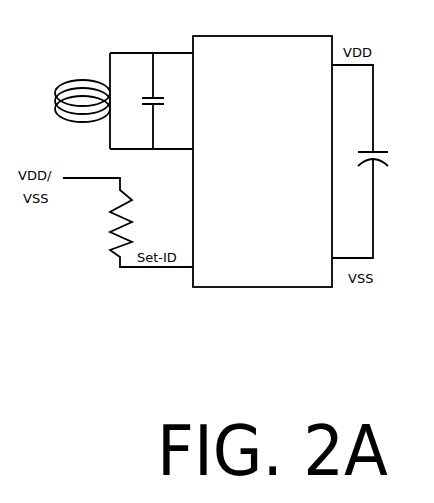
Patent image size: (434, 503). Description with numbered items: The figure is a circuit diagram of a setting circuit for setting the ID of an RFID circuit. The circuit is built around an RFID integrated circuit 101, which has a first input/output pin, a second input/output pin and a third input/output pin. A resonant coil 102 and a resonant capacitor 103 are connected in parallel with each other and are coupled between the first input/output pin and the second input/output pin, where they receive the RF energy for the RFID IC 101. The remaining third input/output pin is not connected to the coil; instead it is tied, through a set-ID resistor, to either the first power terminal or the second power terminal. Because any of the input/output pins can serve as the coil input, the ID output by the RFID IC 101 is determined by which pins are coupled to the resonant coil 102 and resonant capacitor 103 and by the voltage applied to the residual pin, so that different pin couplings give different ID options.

The RFID integrated circuit 101 is at (267, 287).
The resonant coil 102 is at (82, 101).
The resonant capacitor 103 is at (143, 101).